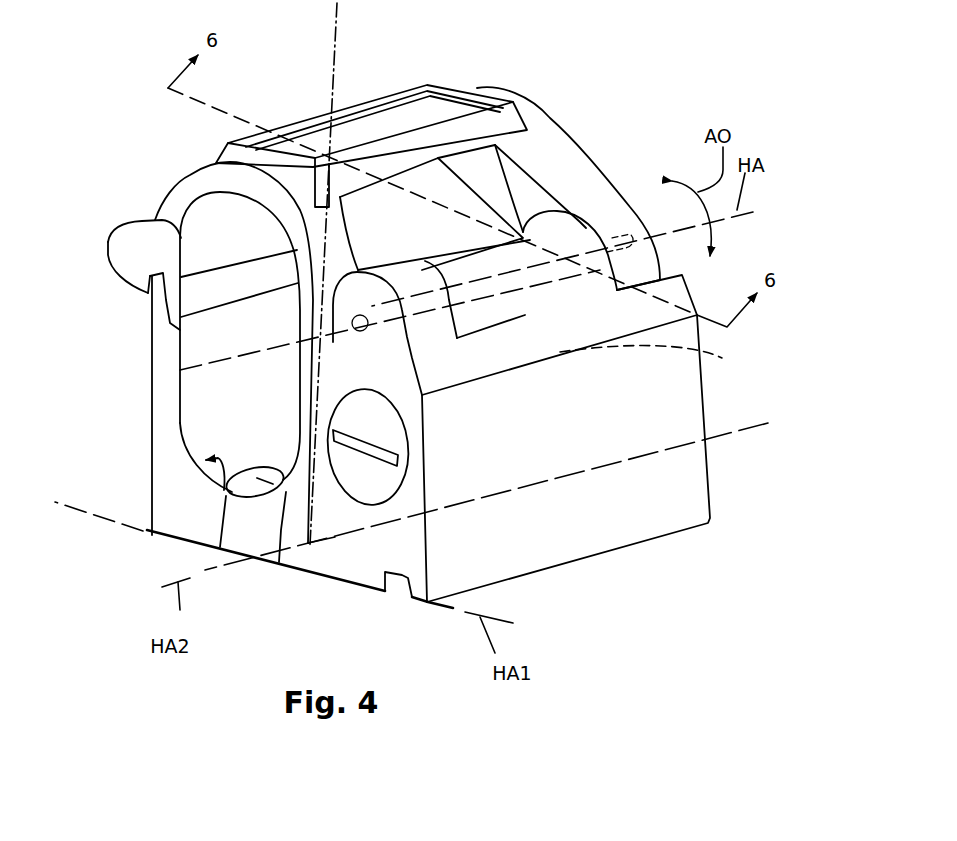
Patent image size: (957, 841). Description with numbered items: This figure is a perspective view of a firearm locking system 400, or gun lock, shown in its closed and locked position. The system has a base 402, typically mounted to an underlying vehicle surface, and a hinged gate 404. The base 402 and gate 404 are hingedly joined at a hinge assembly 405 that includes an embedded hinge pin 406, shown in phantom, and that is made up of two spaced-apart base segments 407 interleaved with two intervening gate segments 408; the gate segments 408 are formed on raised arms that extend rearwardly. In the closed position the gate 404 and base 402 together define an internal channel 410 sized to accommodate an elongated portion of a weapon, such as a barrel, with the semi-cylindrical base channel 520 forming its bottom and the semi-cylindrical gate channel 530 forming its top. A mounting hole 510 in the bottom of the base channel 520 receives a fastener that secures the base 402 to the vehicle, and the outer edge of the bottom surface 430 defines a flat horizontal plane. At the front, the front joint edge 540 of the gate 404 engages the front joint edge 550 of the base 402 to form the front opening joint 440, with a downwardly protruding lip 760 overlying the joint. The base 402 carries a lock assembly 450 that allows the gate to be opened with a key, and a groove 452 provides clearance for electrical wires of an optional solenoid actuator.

The firearm locking system 400 is at (588, 105).
The base 402 is at (685, 378).
The gate 404 is at (521, 95).
The hinge assembly 405 is at (441, 323).
The hinge pin 406 is at (722, 358).
The base segments 407 is at (414, 333).
The gate segments 408 is at (482, 251).
The channel 410 is at (207, 412).
The bottom surface 430 is at (325, 581).
The front opening joint 440 is at (145, 294).
The lock assembly 450 is at (386, 482).
The groove 452 is at (402, 592).
The mounting hole 510 is at (279, 562).
The base channel 520 is at (213, 547).
The gate channel 530 is at (232, 198).
The front joint edge of the gate 540 is at (165, 272).
The front joint edge of the base 550 is at (150, 306).
The lip 760 is at (141, 276).